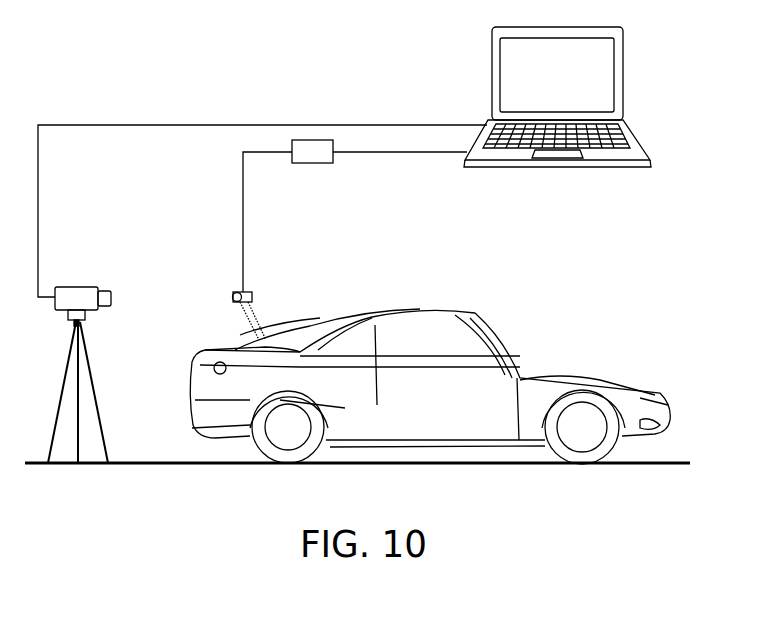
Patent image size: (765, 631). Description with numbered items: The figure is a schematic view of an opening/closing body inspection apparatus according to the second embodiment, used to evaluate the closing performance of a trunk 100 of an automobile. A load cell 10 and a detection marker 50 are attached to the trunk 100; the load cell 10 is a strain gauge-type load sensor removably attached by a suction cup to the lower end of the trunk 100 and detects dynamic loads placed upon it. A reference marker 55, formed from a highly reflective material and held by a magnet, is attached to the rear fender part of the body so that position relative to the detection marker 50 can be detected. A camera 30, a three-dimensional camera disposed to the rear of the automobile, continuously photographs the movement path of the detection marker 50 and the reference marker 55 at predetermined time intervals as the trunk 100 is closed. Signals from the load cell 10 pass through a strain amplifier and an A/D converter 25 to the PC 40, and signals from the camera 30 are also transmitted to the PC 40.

The load cell 10 is at (253, 295).
The A/D converter 25 is at (325, 165).
The camera 30 is at (84, 285).
The PC 40 is at (624, 45).
The detection marker 50 is at (233, 295).
The reference marker 55 is at (212, 369).
The trunk 100 is at (245, 322).